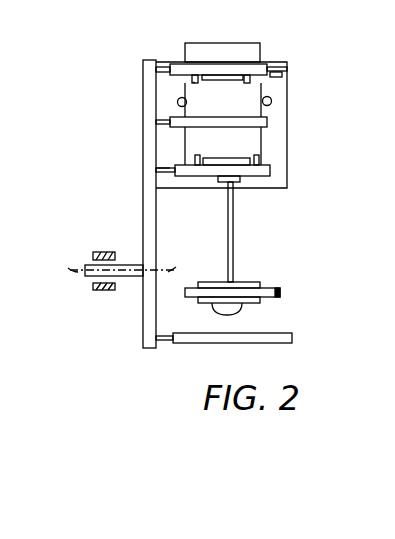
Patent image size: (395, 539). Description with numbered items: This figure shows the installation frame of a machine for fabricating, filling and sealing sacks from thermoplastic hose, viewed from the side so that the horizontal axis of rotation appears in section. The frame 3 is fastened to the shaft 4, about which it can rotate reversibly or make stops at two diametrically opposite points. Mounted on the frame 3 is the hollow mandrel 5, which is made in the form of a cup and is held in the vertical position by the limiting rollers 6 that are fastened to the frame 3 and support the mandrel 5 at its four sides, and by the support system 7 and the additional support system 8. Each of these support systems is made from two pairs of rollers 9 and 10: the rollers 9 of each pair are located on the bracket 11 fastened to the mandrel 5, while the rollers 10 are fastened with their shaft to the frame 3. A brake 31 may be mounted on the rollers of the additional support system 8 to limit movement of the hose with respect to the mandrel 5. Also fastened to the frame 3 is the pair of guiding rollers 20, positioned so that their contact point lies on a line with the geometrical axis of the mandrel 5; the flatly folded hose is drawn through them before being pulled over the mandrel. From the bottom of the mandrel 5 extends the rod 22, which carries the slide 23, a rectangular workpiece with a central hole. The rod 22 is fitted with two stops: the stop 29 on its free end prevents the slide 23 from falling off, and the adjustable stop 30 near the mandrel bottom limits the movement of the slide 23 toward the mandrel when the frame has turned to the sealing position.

The frame 3 is at (150, 94).
The shaft 4 is at (128, 276).
The hollow mandrel 5 is at (255, 142).
The limiting rollers 6 is at (273, 102).
The support system 7 is at (165, 160).
The additional support system 8 is at (273, 66).
The rollers 9 is at (214, 81).
The rollers 10 is at (176, 66).
The bracket 11 is at (194, 82).
The guiding rollers 20 is at (223, 338).
The rod 22 is at (228, 244).
The slide 23 is at (267, 291).
The stop 29 is at (238, 307).
The stop 30 is at (238, 181).
The brake 31 is at (278, 75).